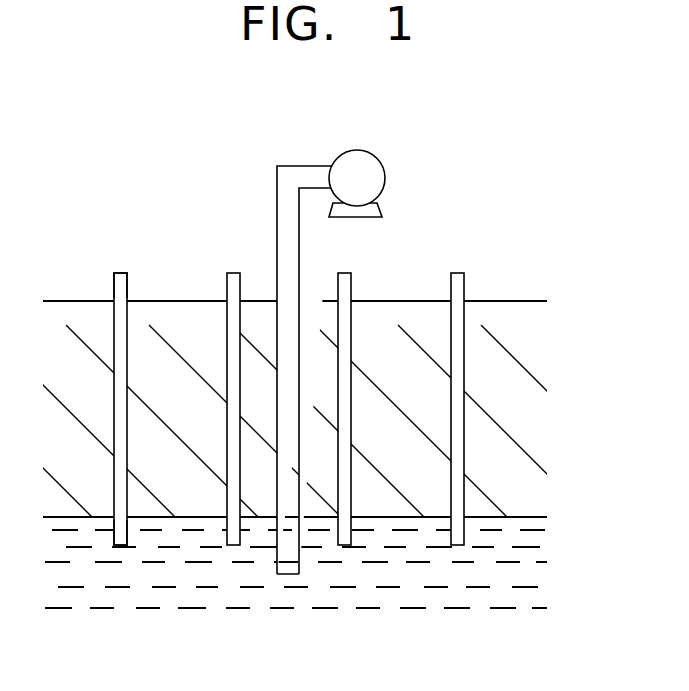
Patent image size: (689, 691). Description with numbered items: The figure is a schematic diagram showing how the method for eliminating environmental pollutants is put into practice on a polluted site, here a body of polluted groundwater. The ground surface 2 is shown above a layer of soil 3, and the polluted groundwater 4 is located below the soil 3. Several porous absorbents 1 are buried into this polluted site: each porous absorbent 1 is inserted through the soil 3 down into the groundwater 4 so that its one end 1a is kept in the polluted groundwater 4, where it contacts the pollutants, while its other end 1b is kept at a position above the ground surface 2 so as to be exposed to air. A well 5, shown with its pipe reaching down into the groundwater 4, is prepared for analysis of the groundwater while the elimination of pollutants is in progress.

The porous absorbent 1 is at (113, 328).
The one end of the porous absorbent 1a is at (127, 535).
The other end of the porous absorbent 1b is at (121, 272).
The ground surface 2 is at (526, 300).
The soil 3 is at (530, 408).
The polluted groundwater 4 is at (505, 588).
The well 5 is at (370, 154).